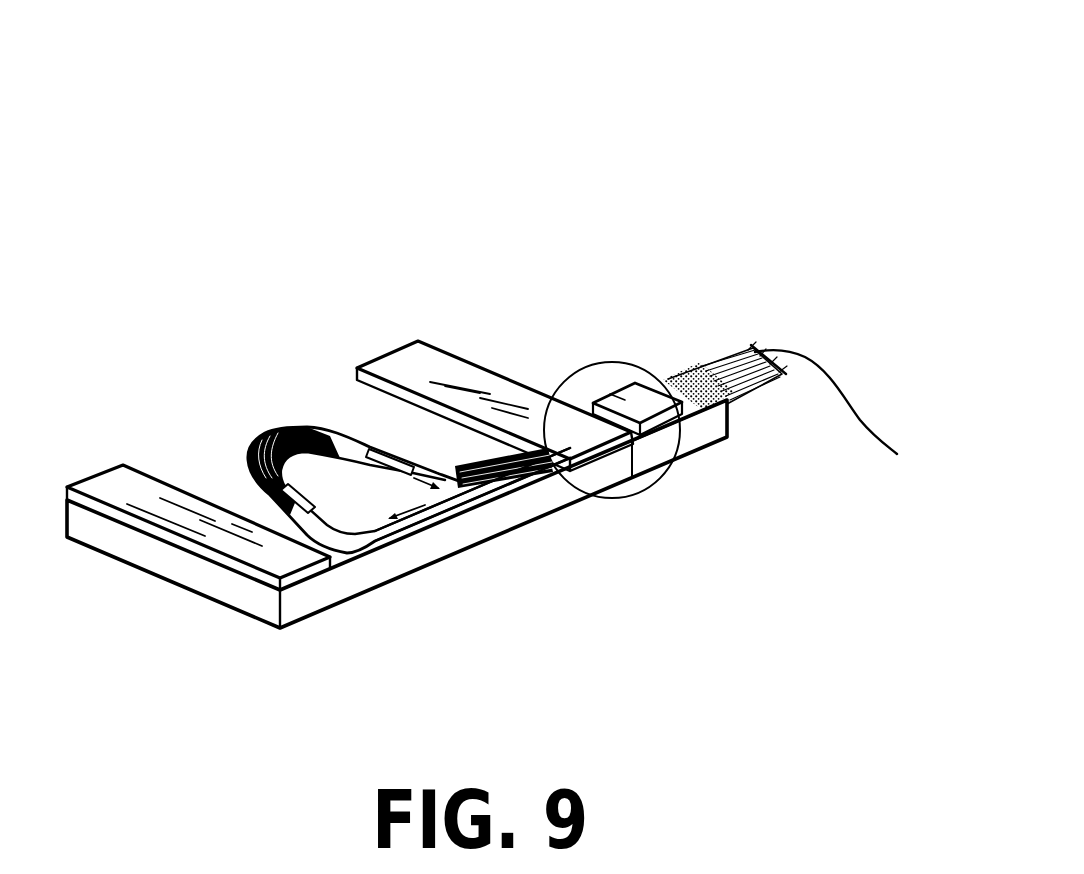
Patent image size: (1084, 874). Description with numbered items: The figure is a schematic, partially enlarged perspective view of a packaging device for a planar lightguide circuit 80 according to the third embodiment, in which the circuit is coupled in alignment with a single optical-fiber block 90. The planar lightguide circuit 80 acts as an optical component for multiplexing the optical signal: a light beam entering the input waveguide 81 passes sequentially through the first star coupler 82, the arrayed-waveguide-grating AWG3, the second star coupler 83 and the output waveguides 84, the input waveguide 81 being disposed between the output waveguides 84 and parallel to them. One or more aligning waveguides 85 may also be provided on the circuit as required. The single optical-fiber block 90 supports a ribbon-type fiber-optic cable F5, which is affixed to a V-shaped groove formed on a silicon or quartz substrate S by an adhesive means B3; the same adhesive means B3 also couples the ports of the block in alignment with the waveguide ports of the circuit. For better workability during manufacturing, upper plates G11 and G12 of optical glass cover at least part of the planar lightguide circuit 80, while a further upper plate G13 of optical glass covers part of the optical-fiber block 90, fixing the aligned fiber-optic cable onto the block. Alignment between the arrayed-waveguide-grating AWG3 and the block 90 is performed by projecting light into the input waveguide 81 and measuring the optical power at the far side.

The planar lightguide circuit 80 is at (281, 322).
The substrate S is at (477, 528).
The single optical-fiber block 90 is at (716, 423).
The upper plate of optical glass G11 is at (113, 485).
The upper plate of optical glass G12 is at (407, 366).
The upper plate of optical glass G13 is at (592, 403).
The arrayed-waveguide-grating AWG3 is at (253, 440).
The first star coupler 82 is at (273, 490).
The second star coupler 83 is at (388, 450).
The output waveguides 84 is at (520, 483).
The aligning waveguides 85 is at (402, 538).
The input waveguide 81 is at (420, 515).
The adhesive means B3 is at (687, 382).
The ribbon-type fiber-optic cable F5 is at (840, 413).